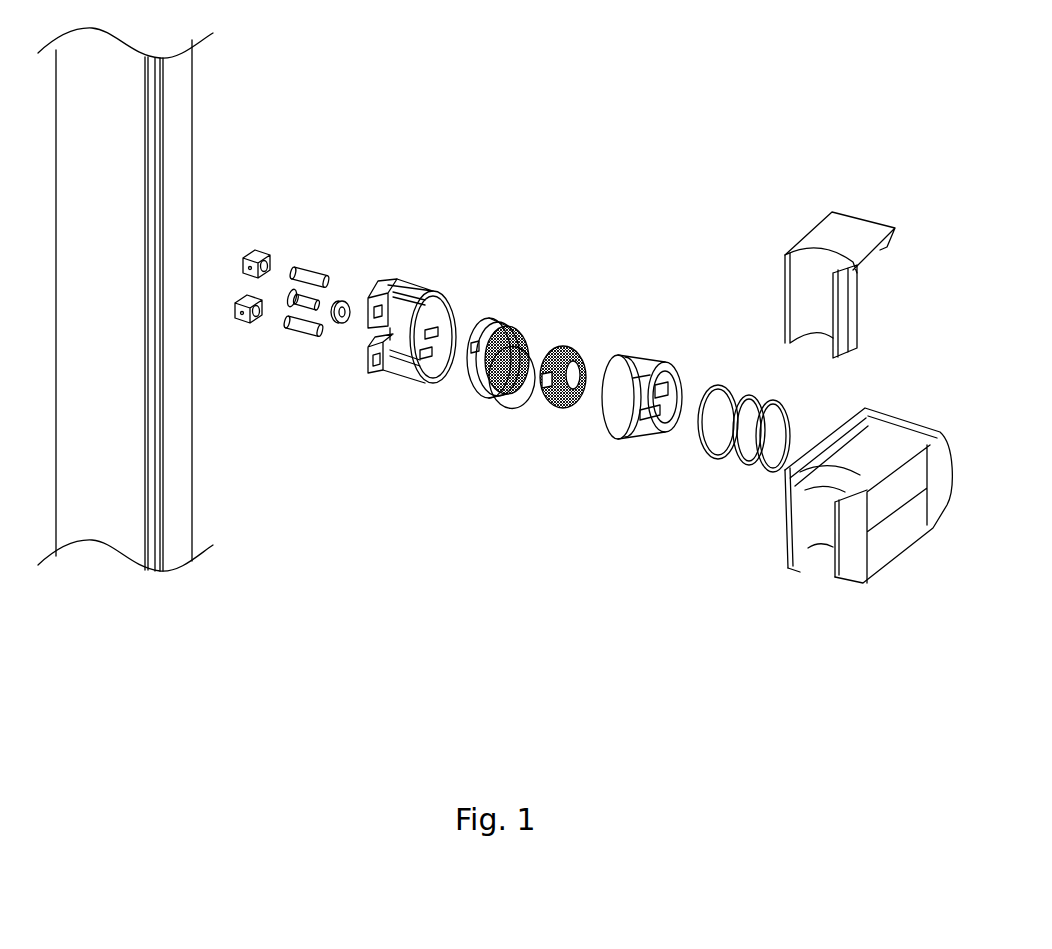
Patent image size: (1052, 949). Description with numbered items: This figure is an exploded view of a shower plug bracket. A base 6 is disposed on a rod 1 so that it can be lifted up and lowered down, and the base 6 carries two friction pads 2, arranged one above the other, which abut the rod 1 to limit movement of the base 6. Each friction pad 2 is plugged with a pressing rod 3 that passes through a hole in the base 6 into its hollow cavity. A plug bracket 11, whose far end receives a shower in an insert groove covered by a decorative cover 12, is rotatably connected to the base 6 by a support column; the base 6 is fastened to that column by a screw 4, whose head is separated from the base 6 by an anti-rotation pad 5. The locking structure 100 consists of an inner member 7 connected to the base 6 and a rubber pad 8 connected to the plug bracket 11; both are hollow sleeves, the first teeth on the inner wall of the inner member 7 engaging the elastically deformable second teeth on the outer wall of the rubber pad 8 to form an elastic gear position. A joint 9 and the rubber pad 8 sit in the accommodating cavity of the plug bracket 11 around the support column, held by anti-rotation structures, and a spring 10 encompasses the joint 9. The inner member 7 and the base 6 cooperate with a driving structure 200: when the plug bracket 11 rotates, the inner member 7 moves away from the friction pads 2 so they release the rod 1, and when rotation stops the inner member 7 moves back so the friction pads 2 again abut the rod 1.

The rod 1 is at (173, 102).
The friction pads 2 is at (257, 250).
The pressing rod 3 is at (303, 273).
The screw 4 is at (308, 303).
The anti-rotation pad 5 is at (345, 304).
The base 6 is at (440, 296).
The inner member 7 is at (517, 317).
The rubber pad 8 is at (573, 347).
The joint 9 is at (650, 377).
The spring 10 is at (723, 458).
The plug bracket 11 is at (797, 573).
The decorative cover 12 is at (862, 235).
The locking structure 100 is at (527, 385).
The driving structure 200 is at (448, 382).